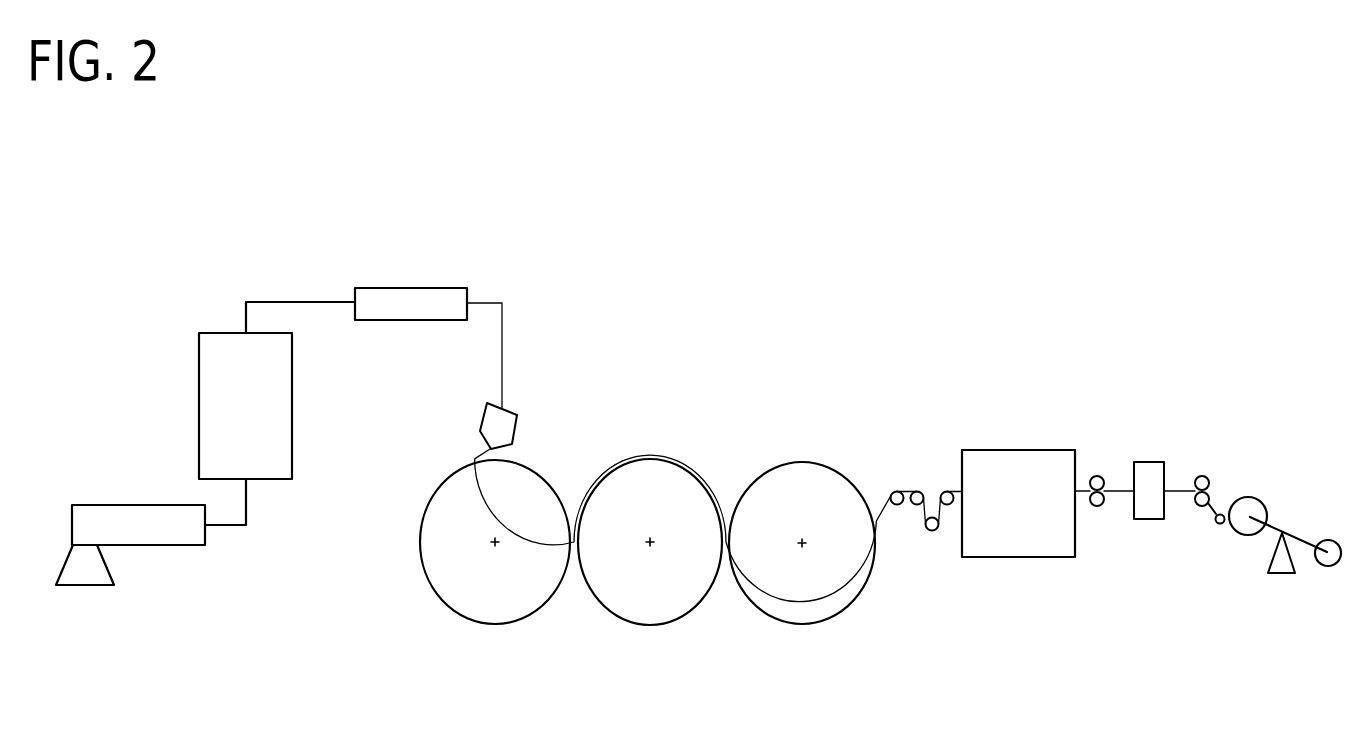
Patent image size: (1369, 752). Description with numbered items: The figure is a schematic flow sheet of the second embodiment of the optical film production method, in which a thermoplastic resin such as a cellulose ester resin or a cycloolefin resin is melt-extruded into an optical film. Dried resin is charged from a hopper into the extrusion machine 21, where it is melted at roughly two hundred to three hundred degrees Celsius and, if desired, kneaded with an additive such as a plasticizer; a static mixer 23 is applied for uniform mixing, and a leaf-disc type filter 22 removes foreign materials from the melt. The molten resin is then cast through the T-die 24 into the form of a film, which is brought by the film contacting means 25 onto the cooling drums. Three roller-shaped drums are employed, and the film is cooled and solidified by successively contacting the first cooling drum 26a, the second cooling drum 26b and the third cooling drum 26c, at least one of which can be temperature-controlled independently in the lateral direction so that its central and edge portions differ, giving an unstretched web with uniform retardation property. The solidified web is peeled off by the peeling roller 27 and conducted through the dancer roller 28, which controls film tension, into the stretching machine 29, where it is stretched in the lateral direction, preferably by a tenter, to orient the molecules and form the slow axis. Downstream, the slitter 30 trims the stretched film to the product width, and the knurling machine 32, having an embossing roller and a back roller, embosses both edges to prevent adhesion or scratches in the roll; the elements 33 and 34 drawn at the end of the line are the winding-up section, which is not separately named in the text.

The extrusion machine 21 is at (86, 570).
The leaf-disc type filter 22 is at (213, 364).
The static mixer 23 is at (389, 298).
The T-die 24 is at (492, 419).
The film contacting means 25 is at (474, 450).
The first cooling drum 26a is at (500, 612).
The second cooling drum 26b is at (651, 610).
The third cooling drum 26c is at (805, 612).
The peeling roller 27 is at (897, 490).
The dancer roller 28 is at (933, 532).
The stretching machine 29 is at (1018, 468).
The slitter 30 is at (1100, 507).
The knurling machine 32 is at (1205, 476).
The winder support 33 is at (1280, 583).
The winding roll 34 is at (1257, 507).